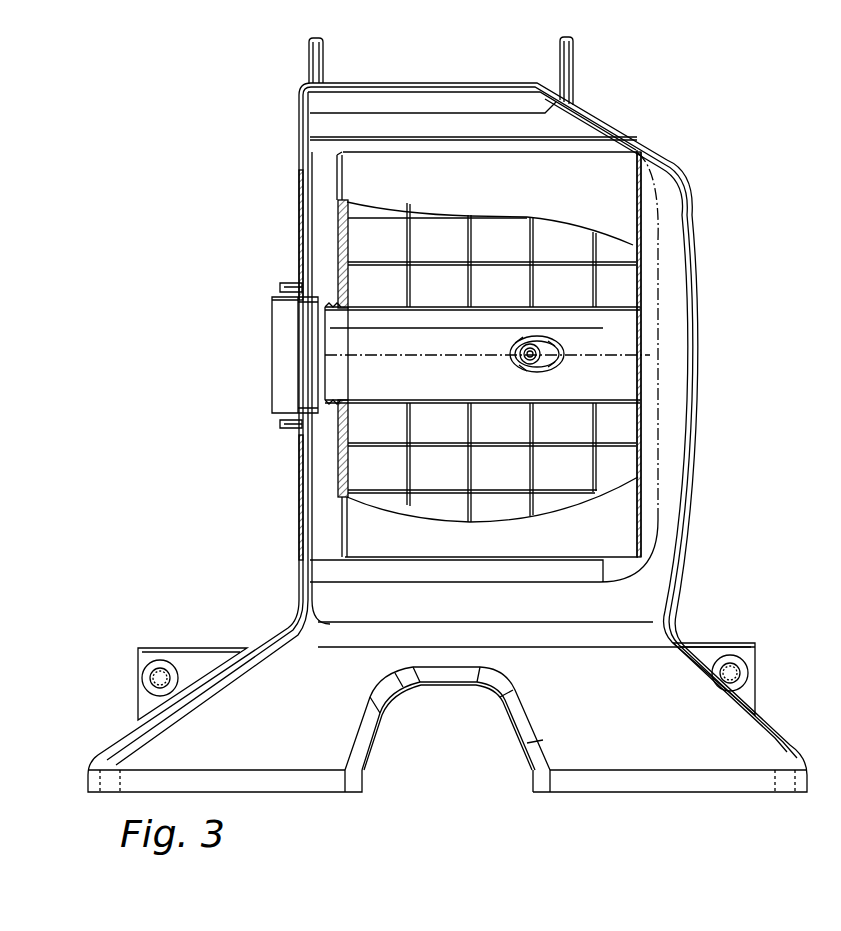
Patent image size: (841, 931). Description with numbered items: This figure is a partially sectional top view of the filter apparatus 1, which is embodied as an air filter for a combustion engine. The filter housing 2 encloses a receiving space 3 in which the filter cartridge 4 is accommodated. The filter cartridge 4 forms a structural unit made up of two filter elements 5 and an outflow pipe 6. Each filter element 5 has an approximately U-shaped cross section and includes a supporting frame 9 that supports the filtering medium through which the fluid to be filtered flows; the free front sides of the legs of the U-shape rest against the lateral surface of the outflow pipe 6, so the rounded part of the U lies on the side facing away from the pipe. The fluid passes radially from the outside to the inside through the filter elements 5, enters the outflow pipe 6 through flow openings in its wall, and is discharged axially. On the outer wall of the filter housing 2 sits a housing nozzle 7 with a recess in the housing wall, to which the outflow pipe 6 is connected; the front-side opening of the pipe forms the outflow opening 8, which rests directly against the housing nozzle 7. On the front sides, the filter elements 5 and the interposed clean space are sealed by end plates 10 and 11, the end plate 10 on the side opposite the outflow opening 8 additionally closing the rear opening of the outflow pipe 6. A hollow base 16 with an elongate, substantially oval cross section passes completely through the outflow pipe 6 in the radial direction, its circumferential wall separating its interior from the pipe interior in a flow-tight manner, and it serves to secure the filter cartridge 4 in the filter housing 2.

The filter apparatus 1 is at (244, 172).
The filter housing 2 is at (670, 163).
The receiving space 3 is at (675, 216).
The filter cartridge 4 is at (601, 167).
The filter element 5 is at (506, 190).
The outflow pipe 6 is at (455, 386).
The housing nozzle 7 is at (278, 418).
The outflow opening 8 is at (325, 333).
The supporting frame 9 is at (409, 248).
The end plate 10 is at (637, 432).
The end plate 11 is at (342, 462).
The hollow base 16 is at (556, 352).